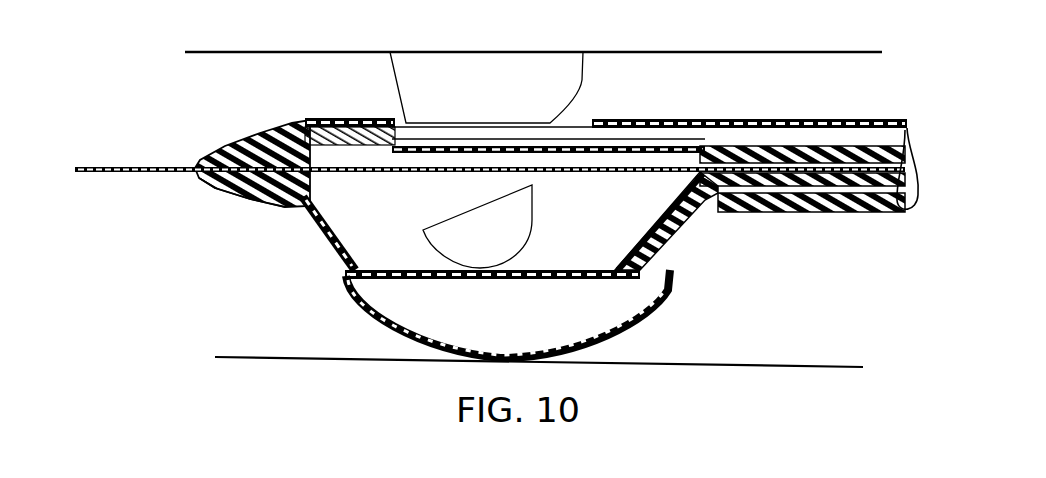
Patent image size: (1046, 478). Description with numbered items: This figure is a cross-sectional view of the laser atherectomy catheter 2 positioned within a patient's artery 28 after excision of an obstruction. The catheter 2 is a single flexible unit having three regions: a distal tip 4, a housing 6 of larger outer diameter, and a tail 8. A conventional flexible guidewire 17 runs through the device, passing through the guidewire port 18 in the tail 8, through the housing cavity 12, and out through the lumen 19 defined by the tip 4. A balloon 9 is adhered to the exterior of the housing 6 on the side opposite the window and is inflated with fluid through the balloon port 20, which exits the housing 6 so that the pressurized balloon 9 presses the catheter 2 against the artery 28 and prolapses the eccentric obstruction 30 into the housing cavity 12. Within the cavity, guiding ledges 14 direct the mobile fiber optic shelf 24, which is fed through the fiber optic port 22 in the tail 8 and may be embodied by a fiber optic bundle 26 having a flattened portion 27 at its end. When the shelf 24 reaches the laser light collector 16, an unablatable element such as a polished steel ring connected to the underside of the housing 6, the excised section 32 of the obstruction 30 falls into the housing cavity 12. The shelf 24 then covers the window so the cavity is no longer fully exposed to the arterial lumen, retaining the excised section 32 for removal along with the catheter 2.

The catheter 2 is at (216, 272).
The tip 4 is at (256, 142).
The housing 6 is at (318, 240).
The tail 8 is at (824, 205).
The balloon 9 is at (345, 288).
The housing cavity 12 is at (618, 216).
The guiding ledges 14 is at (433, 155).
The laser light collector 16 is at (338, 118).
The guidewire 17 is at (128, 168).
The guidewire port 18 is at (772, 148).
The lumen 19 is at (205, 186).
The balloon port 20 is at (752, 130).
The fiber optic port 22 is at (660, 248).
The mobile fiber optic shelf 24 is at (709, 132).
The fiber optic bundle 26 is at (862, 125).
The flattened portion 27 is at (392, 138).
The artery 28 is at (757, 52).
The eccentric obstruction 30 is at (472, 97).
The excised section 32 is at (492, 247).